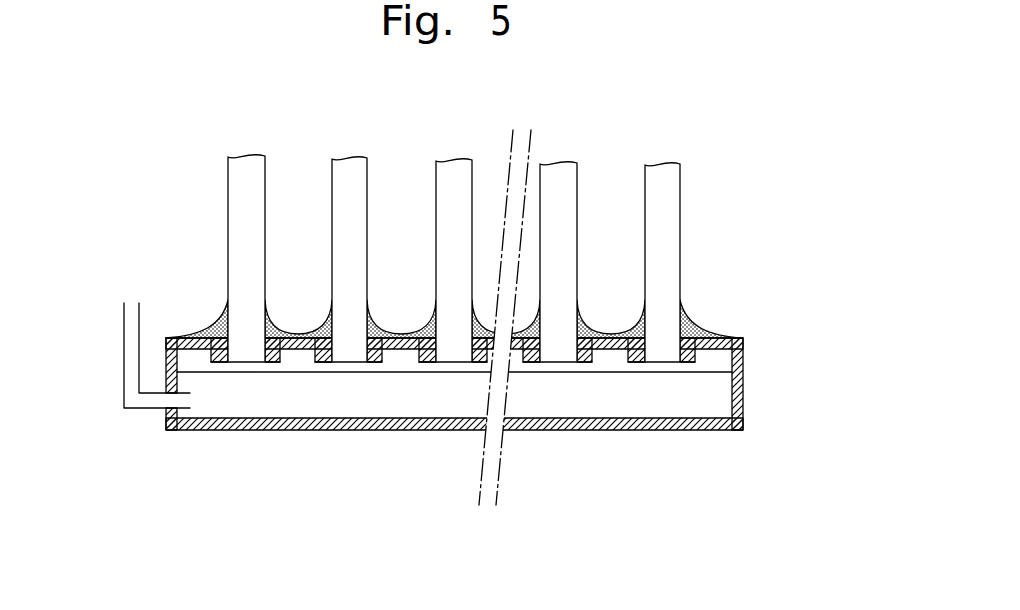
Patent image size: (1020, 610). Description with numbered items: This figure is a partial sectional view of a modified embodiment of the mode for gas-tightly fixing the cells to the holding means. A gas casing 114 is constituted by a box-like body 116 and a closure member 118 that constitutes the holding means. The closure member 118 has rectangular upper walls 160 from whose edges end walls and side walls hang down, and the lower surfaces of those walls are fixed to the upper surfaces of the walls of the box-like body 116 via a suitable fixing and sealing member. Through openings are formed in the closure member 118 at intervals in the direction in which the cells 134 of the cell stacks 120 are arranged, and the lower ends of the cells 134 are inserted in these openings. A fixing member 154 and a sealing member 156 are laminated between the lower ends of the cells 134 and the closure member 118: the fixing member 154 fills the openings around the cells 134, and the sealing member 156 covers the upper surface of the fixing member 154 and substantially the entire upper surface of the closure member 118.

The gas casing 114 is at (492, 442).
The box-like body 116 is at (678, 433).
The closure member 118 is at (513, 424).
The cell stacks 120 is at (448, 258).
The cells 134 is at (681, 243).
The fixing member 154 is at (277, 362).
The sealing member 156 is at (274, 330).
The upper walls 160 is at (403, 350).